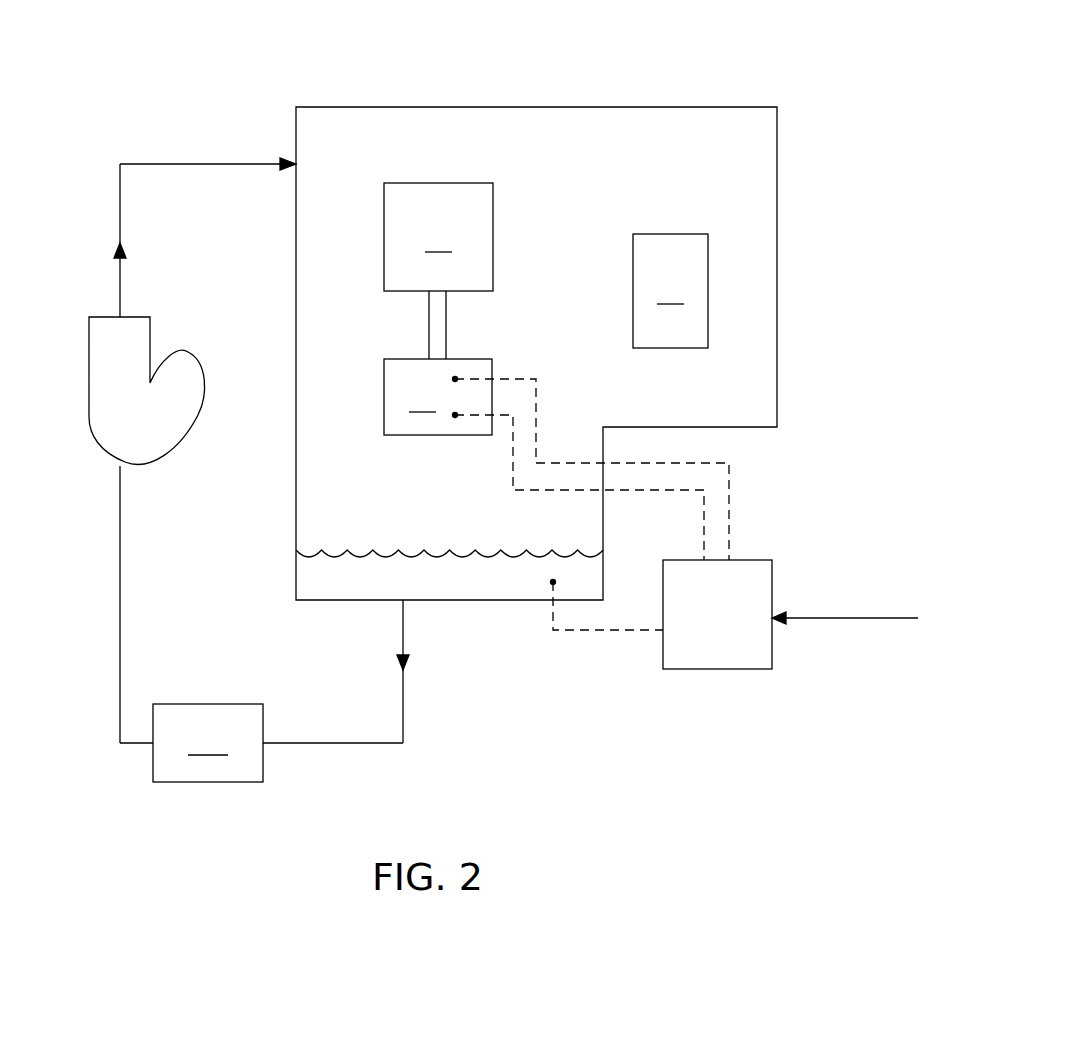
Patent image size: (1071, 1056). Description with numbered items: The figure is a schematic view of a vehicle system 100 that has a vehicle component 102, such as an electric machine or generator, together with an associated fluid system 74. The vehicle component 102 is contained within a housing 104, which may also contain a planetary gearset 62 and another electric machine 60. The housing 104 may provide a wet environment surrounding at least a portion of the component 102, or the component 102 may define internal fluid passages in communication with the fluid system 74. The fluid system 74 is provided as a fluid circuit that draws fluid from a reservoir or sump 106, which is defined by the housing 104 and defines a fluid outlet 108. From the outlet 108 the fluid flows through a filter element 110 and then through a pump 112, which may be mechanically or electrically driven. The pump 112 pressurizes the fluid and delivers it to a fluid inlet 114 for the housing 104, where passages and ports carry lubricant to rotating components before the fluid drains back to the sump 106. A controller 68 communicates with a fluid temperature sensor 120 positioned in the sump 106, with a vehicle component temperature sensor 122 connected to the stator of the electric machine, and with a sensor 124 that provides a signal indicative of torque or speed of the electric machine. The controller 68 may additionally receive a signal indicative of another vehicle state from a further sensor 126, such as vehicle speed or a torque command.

The vehicle system 100 is at (818, 70).
The housing 104 is at (735, 107).
The reservoir or sump 106 is at (491, 583).
The planetary gearset 62 is at (438, 271).
The electric machine 60 is at (670, 291).
The vehicle component 102 is at (384, 399).
The sensor 124 is at (455, 377).
The vehicle component temperature sensor 122 is at (455, 417).
The fluid temperature sensor 120 is at (551, 584).
The controller 68 is at (716, 669).
The sensor 126 is at (841, 620).
The fluid outlet 108 is at (405, 608).
The filter element 110 is at (261, 743).
The fluid system 74 is at (120, 277).
The fluid inlet 114 is at (296, 162).
The pump 112 is at (89, 381).